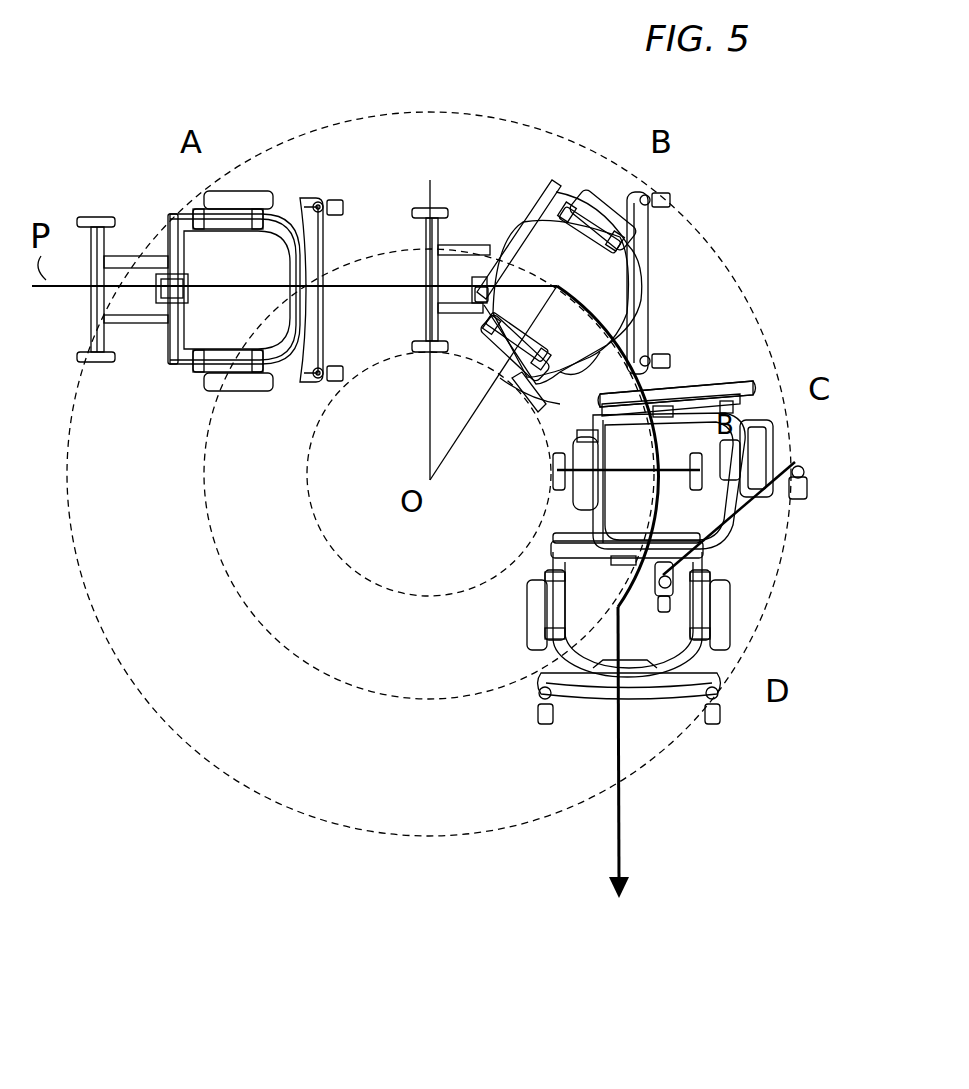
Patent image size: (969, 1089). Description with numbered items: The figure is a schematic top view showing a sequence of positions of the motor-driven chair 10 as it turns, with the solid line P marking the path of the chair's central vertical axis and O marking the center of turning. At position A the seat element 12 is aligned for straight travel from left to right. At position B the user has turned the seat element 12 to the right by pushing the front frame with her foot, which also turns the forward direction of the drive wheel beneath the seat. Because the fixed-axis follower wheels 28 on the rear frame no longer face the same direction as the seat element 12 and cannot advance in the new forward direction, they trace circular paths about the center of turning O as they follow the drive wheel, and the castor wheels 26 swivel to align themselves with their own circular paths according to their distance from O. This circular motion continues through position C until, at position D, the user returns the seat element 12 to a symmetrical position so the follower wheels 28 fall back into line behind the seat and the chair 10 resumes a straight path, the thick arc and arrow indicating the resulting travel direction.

The motor-driven chair 10 is at (118, 57).
The seat element 12 is at (186, 368).
The castor wheel 26 is at (317, 383).
The fixed-axis follower wheel 28 is at (102, 365).